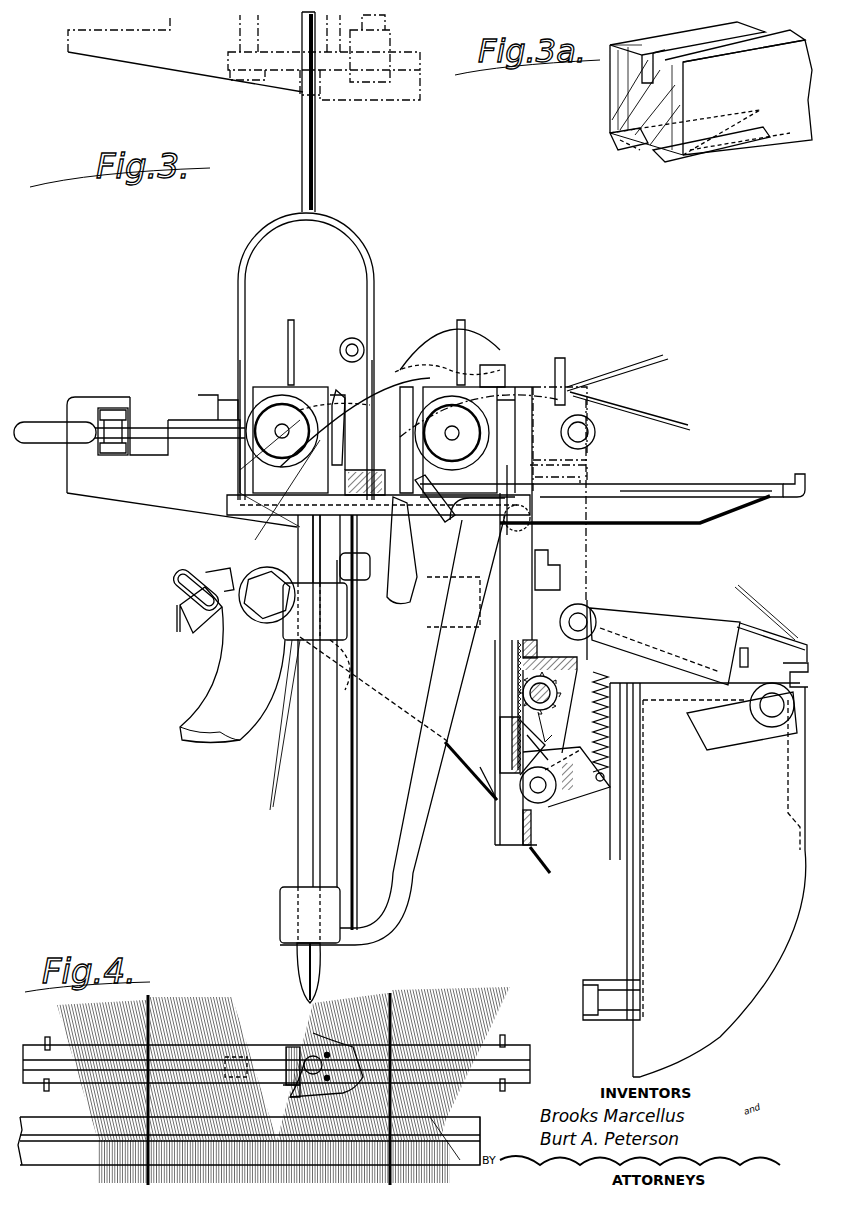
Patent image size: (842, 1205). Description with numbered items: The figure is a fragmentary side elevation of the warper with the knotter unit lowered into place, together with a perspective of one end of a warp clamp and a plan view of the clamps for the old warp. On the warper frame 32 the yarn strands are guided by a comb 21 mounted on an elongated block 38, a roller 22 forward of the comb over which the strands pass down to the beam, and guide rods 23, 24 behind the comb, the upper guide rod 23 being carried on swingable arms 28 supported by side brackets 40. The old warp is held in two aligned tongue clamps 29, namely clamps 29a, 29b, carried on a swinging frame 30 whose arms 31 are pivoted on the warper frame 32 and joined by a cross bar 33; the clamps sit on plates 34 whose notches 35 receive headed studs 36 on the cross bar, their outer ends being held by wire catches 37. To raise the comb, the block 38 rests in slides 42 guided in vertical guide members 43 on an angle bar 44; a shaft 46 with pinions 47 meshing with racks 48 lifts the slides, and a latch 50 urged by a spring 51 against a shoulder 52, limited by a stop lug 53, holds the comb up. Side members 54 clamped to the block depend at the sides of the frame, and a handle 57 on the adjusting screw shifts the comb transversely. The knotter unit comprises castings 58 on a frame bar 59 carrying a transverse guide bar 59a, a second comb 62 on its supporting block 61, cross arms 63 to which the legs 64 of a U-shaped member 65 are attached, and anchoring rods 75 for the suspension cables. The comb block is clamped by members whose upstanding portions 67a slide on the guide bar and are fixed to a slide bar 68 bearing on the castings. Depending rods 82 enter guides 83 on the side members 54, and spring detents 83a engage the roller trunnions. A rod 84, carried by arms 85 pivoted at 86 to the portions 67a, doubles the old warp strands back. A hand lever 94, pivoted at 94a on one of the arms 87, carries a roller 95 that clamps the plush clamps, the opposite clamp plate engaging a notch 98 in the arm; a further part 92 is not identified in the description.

In FIG. 3, the comb 21 is at (465, 320).
In FIG. 4, the comb 21 is at (462, 1120).
In FIG. 3, the roller 22 is at (405, 560).
In FIG. 3, the upper guide rod 23 is at (596, 428).
In FIG. 3, the guide rod 24 is at (516, 537).
In FIG. 3, the arms 28 is at (567, 370).
In FIG. 3, the tongue clamps 29 is at (215, 585).
In FIG. 3A, the tongue clamps 29 is at (778, 118).
In FIG. 4, the tongue clamps 29 is at (515, 1035).
In FIG. 3, the tongue clamp 29a is at (600, 398).
In FIG. 4, the tongue clamp 29a is at (526, 1060).
In FIG. 4, the tongue clamp 29b is at (36, 1047).
In FIG. 3, the swinging frame 30 is at (694, 625).
In FIG. 3, the arms 31 is at (592, 537).
In FIG. 3, the warper frame 32 is at (582, 615).
In FIG. 3, the cross bar 33 is at (755, 660).
In FIG. 4, the cross bar 33 is at (292, 1047).
In FIG. 3A, the plates 34 is at (705, 165).
In FIG. 4, the plates 34 is at (310, 1056).
In FIG. 3A, the notches 35 is at (645, 148).
In FIG. 4, the notches 35 is at (295, 1090).
In FIG. 4, the headed studs 36 is at (315, 1035).
In FIG. 3, the wire catches 37 is at (762, 632).
In FIG. 4, the wire catches 37 is at (44, 1085).
In FIG. 3, the elongated block 38 is at (490, 395).
In FIG. 3, the side brackets 40 is at (482, 782).
In FIG. 3, the slides 42 is at (532, 690).
In FIG. 3, the vertical guide members 43 is at (497, 845).
In FIG. 3, the angle bar 44 is at (548, 563).
In FIG. 3, the shaft 46 is at (512, 705).
In FIG. 3, the pinions 47 is at (548, 727).
In FIG. 3, the racks 48 is at (522, 652).
In FIG. 3, the latch 50 is at (515, 742).
In FIG. 3, the spring 51 is at (610, 745).
In FIG. 3, the shoulder 52 is at (503, 725).
In FIG. 3, the stop lug 53 is at (574, 792).
In FIG. 3, the side members 54 is at (392, 855).
In FIG. 3, the handle 57 is at (462, 448).
In FIG. 3, the castings 58 is at (178, 503).
In FIG. 3, the frame bar 59 is at (290, 515).
In FIG. 3, the transverse guide bar 59a is at (332, 400).
In FIG. 3, the supporting block 61 is at (280, 393).
In FIG. 3, the second comb 62 is at (290, 325).
In FIG. 3, the cross arms 63 is at (228, 500).
In FIG. 3, the legs 64 is at (243, 347).
In FIG. 3, the U-shaped member 65 is at (338, 230).
In FIG. 3, the upstanding portions 67a is at (340, 390).
In FIG. 3, the slide bar 68 is at (345, 473).
In FIG. 3, the anchoring rods 75 is at (302, 147).
In FIG. 3, the depending rods 82 is at (300, 835).
In FIG. 3, the guides 83 is at (345, 615).
In FIG. 3, the spring detents 83a is at (342, 536).
In FIG. 3, the rod 84 is at (478, 355).
In FIG. 3, the arms 85 is at (430, 332).
In FIG. 3, the pivot 86 is at (352, 338).
In FIG. 3, the arms 87 is at (75, 472).
In FIG. 3, the plate 92 is at (730, 484).
In FIG. 3, the hand lever 94 is at (62, 420).
In FIG. 3, the pivot 94a is at (205, 405).
In FIG. 3, the roller 95 is at (120, 408).
In FIG. 3, the notch 98 is at (135, 412).